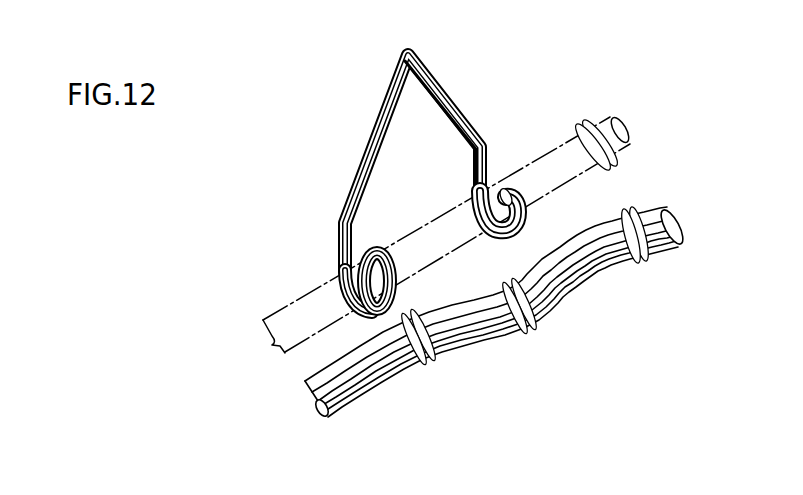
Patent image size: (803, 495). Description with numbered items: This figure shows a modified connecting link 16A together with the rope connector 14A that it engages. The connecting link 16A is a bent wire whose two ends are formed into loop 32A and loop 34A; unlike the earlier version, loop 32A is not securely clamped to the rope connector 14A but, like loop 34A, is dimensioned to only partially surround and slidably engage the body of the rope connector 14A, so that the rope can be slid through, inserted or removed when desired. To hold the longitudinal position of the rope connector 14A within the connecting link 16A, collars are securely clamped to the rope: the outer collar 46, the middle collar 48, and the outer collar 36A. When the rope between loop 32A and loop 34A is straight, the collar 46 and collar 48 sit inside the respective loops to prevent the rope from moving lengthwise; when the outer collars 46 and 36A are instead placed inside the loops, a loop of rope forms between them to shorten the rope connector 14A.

The rope connector 14A is at (548, 153).
The connecting link 16A is at (378, 90).
The loop 32A is at (398, 293).
The loop 34A is at (528, 217).
The collar 36A is at (583, 126).
The collar 46 is at (376, 250).
The collar 48 is at (468, 195).